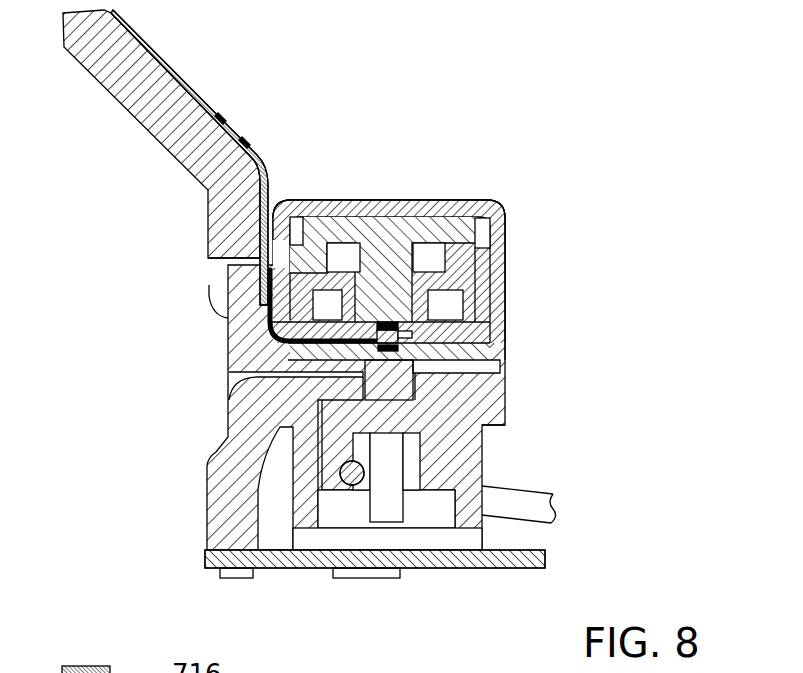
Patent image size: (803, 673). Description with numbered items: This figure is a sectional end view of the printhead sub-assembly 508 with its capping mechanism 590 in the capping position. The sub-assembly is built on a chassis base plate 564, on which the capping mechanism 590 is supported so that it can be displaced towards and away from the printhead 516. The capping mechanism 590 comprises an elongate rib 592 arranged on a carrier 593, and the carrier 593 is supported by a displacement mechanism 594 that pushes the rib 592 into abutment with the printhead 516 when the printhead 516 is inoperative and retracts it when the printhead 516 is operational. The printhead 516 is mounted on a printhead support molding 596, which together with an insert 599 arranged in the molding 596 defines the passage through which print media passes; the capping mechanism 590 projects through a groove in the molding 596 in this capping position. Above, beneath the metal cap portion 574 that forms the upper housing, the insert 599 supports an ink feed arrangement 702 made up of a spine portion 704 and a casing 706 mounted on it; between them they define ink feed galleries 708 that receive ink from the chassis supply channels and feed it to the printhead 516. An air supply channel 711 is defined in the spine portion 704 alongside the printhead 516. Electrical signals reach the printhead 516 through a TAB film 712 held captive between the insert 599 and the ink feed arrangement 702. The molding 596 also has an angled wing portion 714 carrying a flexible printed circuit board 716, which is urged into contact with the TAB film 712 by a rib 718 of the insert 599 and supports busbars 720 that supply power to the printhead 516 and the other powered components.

The printhead sub-assembly 508 is at (636, 194).
The printhead 516 is at (410, 327).
The chassis base plate 564 is at (437, 568).
The cap portion 574 is at (482, 212).
The capping mechanism 590 is at (430, 370).
The elongate rib 592 is at (417, 381).
The carrier 593 is at (437, 428).
The displacement mechanism 594 is at (420, 501).
The printhead support molding 596 is at (247, 375).
The insert 599 is at (250, 342).
The ink feed arrangement 702 is at (484, 231).
The spine portion 704 is at (386, 250).
The casing 706 is at (423, 228).
The ink feed galleries 708 is at (337, 252).
The air supply channel 711 is at (440, 347).
The TAB film 712 is at (252, 363).
The angled wing portion 714 is at (128, 110).
The flexible printed circuit board 716 is at (155, 65).
The rib 718 is at (228, 262).
The busbars 720 is at (245, 141).